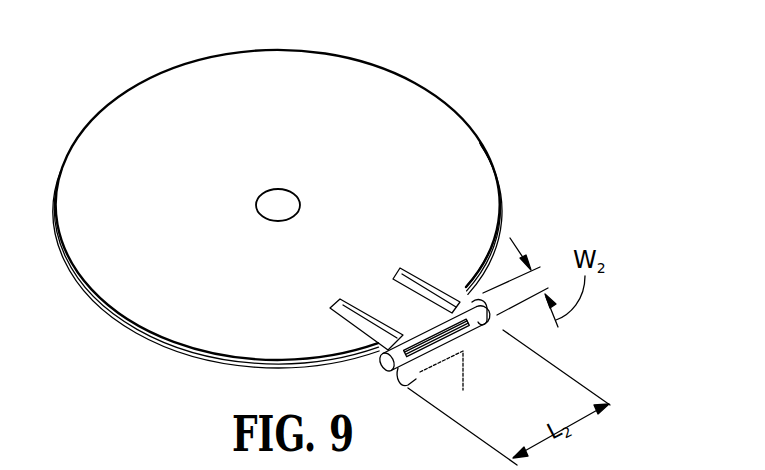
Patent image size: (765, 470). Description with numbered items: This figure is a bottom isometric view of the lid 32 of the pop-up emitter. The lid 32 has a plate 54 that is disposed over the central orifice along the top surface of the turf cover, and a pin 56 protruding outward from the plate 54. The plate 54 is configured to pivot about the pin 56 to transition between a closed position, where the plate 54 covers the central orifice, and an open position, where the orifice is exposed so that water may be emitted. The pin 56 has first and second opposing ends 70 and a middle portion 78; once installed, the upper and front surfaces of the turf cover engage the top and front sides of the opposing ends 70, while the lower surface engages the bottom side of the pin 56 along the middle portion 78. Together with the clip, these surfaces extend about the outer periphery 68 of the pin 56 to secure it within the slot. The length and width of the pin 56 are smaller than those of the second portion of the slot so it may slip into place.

The lid 32 is at (455, 88).
The plate 54 is at (157, 72).
The outer periphery 68 is at (467, 285).
The pin 56 is at (419, 327).
The first and second opposing ends 70 is at (484, 328).
The middle portion 78 is at (463, 390).